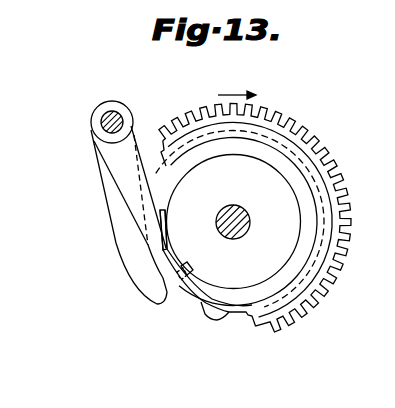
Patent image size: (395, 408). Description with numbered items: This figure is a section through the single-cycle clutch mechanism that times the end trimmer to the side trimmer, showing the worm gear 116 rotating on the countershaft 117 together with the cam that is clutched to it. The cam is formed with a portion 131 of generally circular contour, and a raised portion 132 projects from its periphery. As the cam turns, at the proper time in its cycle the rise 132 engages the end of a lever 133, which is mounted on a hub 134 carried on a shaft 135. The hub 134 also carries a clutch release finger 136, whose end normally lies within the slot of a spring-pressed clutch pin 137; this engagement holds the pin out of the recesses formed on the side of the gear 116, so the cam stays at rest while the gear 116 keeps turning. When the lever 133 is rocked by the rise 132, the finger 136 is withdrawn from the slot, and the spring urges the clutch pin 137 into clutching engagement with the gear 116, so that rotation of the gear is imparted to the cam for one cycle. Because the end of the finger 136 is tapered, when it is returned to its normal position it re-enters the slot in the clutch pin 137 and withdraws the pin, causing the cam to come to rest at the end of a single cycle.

The gear 116 is at (287, 119).
The countershaft 117 is at (245, 212).
The portion of generally circular contour 131 is at (187, 302).
The raised portion 132 is at (212, 321).
The lever 133 is at (155, 291).
The hub 134 is at (98, 116).
The shaft 135 is at (132, 113).
The clutch release finger 136 is at (162, 248).
The clutch pin 137 is at (193, 268).